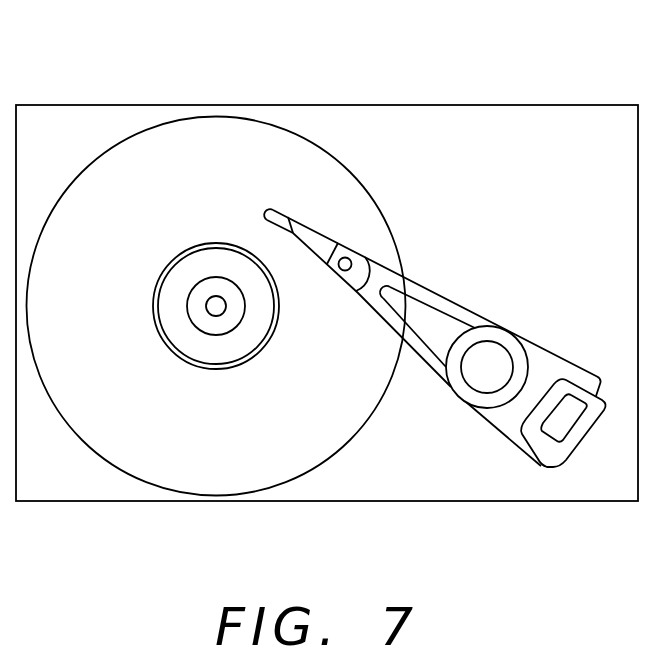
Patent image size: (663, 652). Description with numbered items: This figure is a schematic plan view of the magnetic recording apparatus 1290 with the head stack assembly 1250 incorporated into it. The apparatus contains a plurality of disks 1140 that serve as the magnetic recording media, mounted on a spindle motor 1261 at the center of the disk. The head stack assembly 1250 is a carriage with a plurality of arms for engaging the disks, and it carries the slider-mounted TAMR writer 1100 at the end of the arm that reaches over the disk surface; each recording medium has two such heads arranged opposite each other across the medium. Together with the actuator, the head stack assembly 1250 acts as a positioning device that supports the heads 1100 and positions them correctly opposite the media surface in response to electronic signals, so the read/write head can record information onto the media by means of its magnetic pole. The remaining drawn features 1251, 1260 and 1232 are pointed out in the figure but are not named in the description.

The magnetic recording apparatus 1290 is at (363, 101).
The slider-mounted TAMR writer 1100 is at (283, 208).
The pivot bearing 1251 is at (497, 326).
The disk 1140 is at (147, 487).
The spindle motor 1261 is at (217, 316).
The actuator arm 1260 is at (425, 362).
The head stack assembly 1250 is at (497, 426).
The voice coil 1232 is at (590, 424).